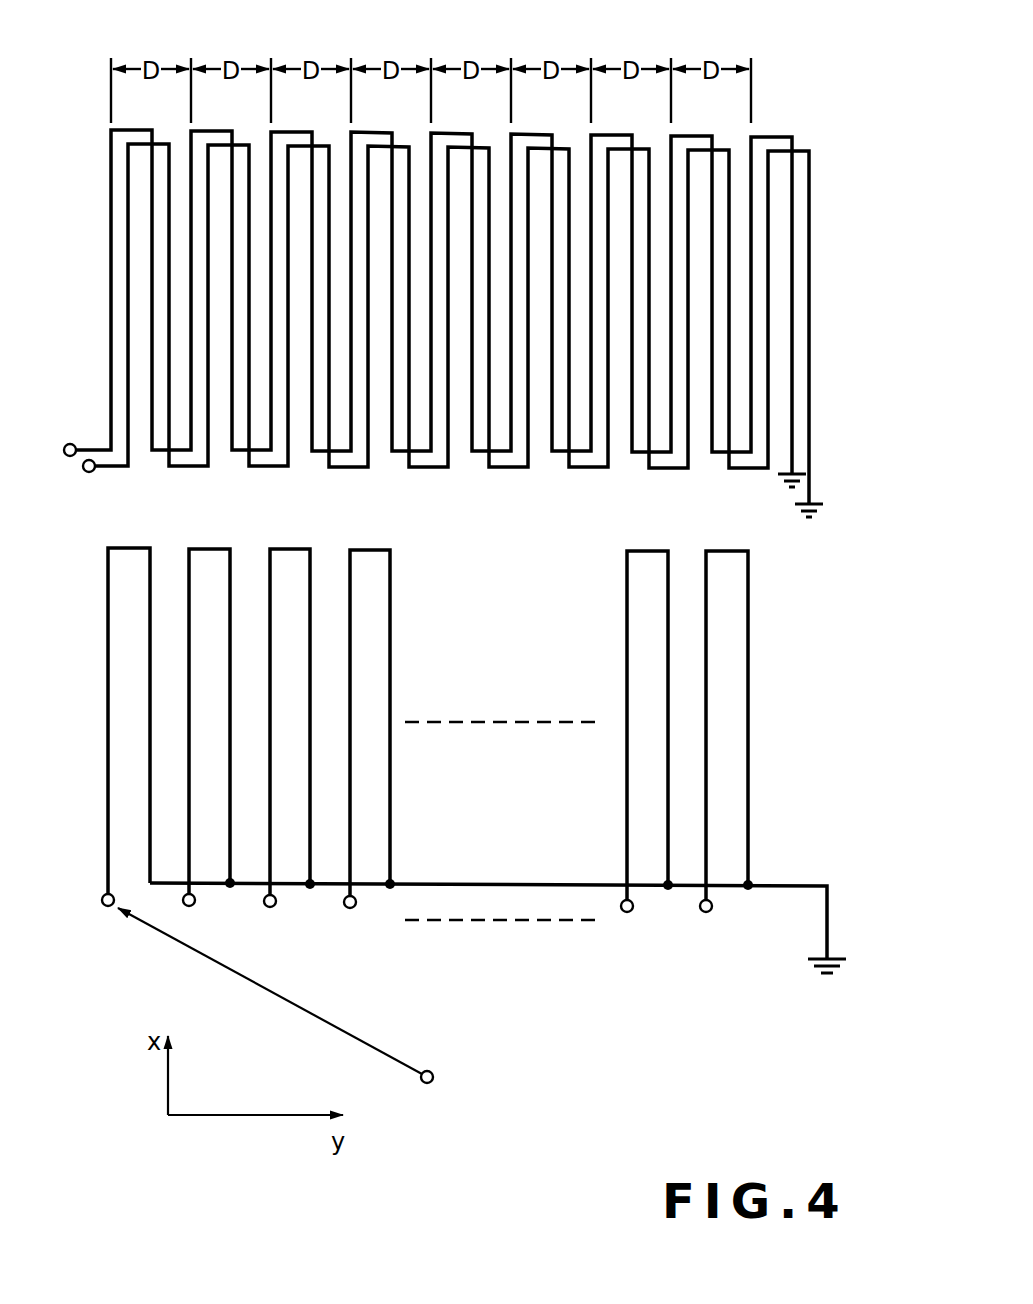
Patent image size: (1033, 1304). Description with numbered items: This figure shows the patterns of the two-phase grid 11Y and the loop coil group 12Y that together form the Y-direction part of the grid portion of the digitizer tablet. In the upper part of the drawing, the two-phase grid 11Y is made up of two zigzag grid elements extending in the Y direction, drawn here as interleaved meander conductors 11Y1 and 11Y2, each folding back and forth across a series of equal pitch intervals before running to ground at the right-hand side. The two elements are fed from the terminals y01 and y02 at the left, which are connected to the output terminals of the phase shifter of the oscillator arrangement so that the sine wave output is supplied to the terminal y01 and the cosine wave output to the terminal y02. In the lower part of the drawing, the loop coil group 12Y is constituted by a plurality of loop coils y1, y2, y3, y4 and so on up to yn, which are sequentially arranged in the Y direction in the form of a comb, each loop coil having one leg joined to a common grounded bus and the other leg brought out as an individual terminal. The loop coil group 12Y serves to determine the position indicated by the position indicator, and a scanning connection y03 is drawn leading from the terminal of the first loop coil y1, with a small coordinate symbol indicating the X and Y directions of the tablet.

The two-phase grid 11Y is at (482, 280).
The first meander excitation coil 11Y1 is at (768, 134).
The second meander excitation coil 11Y2 is at (809, 167).
The loop coil group 12Y is at (668, 627).
The terminal y01 is at (70, 444).
The terminal y02 is at (89, 472).
The scanning terminal y03 is at (427, 1083).
The loop coil y1 is at (111, 920).
The loop coil y2 is at (192, 920).
The loop coil y3 is at (272, 921).
The loop coil y4 is at (354, 922).
The loop coil yn is at (707, 924).